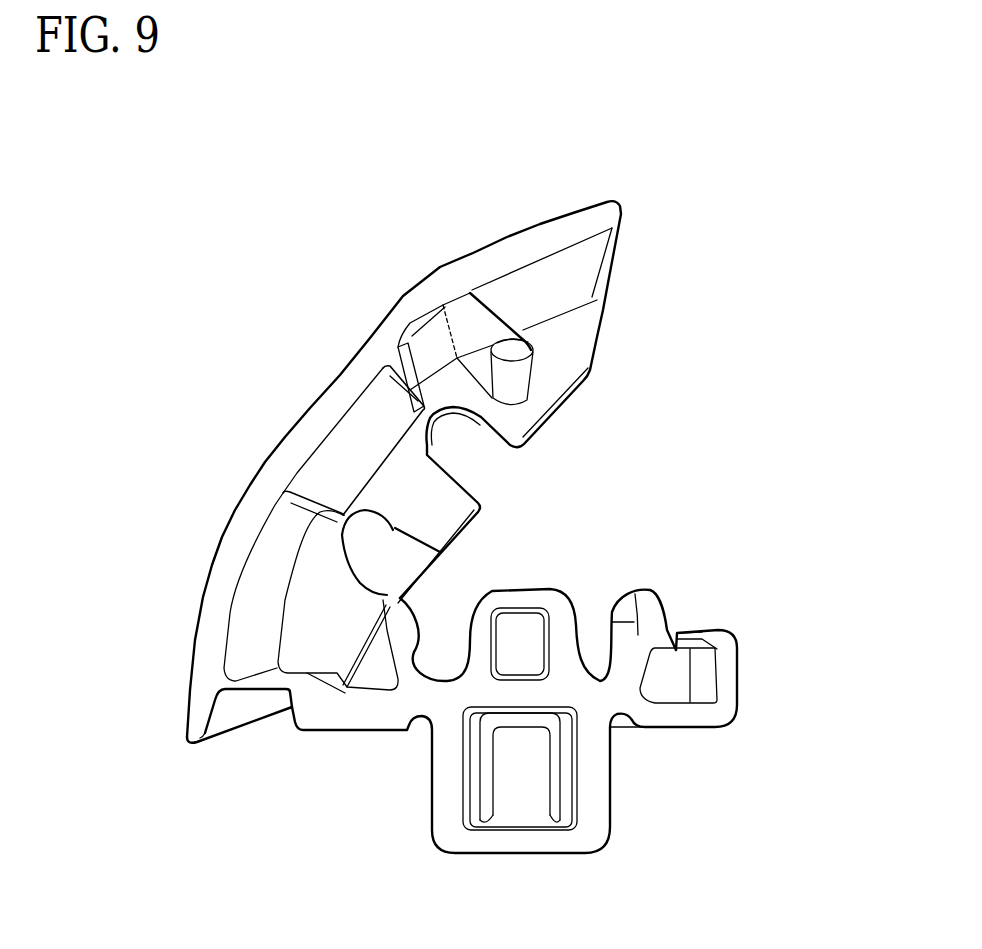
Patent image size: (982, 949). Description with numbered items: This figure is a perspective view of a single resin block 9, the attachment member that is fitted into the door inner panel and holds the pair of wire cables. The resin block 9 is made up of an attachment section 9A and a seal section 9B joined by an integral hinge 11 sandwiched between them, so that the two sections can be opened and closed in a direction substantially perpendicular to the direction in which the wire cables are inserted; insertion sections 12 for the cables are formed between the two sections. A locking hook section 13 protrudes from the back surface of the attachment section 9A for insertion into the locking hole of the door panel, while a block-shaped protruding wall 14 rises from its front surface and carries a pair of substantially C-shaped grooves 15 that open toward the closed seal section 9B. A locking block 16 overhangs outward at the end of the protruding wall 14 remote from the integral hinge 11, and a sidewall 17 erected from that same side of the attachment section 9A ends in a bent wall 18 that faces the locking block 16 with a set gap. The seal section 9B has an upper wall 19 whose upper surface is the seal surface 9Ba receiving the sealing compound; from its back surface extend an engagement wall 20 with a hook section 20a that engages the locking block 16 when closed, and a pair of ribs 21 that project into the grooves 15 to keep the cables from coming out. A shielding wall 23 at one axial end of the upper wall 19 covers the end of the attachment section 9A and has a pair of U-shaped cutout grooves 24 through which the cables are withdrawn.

The resin block 9 is at (700, 235).
The attachment section 9A is at (667, 731).
The seal section 9B is at (241, 511).
The seal surface 9Ba is at (323, 386).
The integral hinge 11 is at (262, 692).
The insertion sections 12 is at (650, 521).
The locking hook section 13 is at (507, 800).
The protruding wall 14 is at (560, 594).
The substantially C-shaped grooves 15 is at (584, 585).
The locking block 16 is at (672, 613).
The sidewall 17 is at (732, 680).
The bent wall 18 is at (716, 638).
The upper wall 19 is at (213, 599).
The engagement wall 20 is at (501, 327).
The hook section 20a is at (531, 341).
The ribs 21 is at (413, 378).
The shielding wall 23 is at (565, 372).
The U-shaped cutout grooves 24 is at (490, 430).